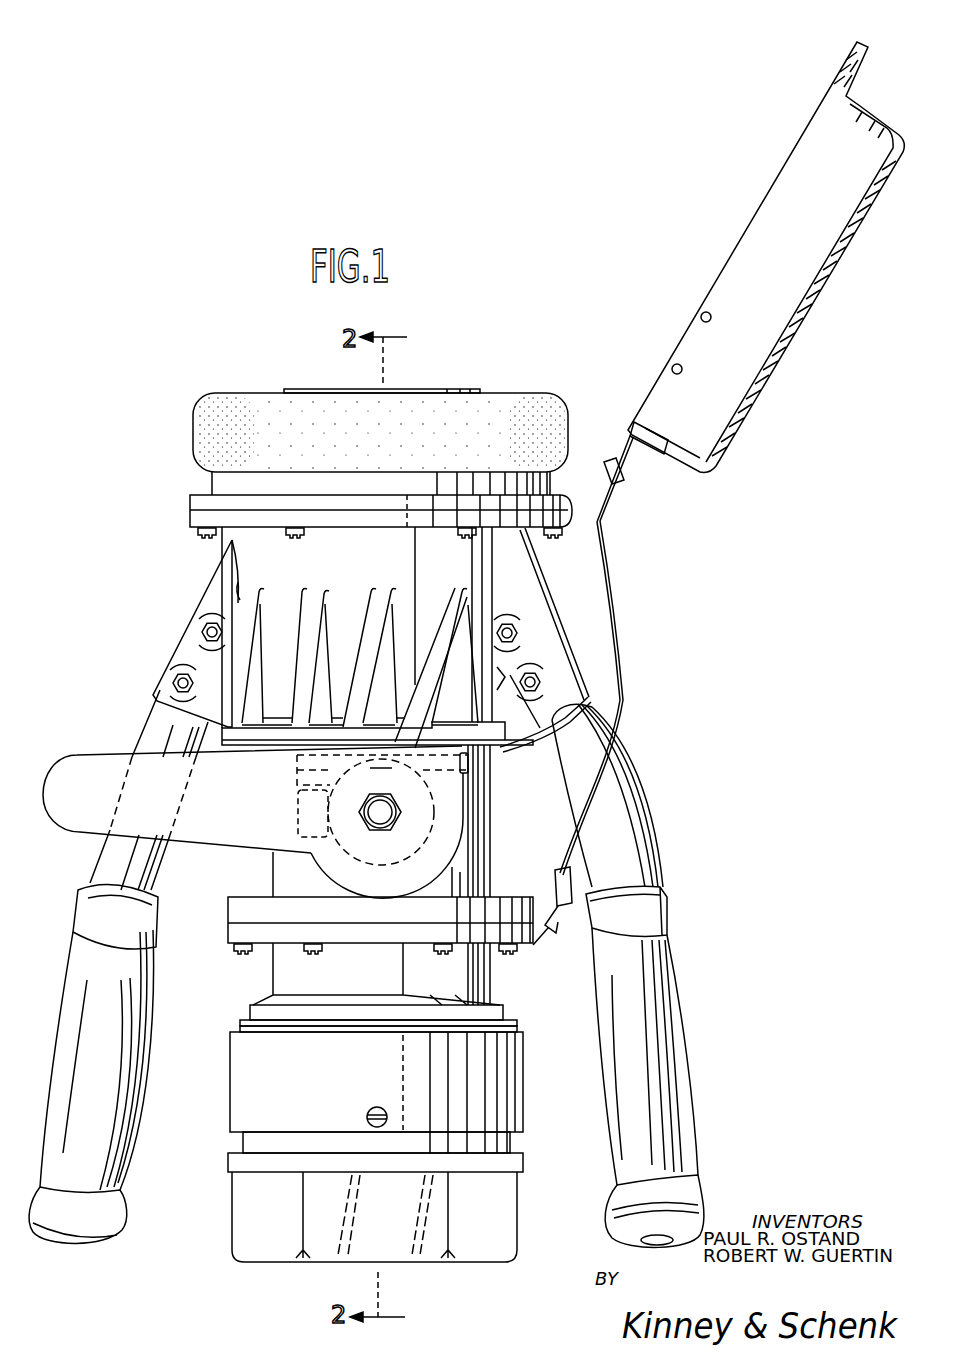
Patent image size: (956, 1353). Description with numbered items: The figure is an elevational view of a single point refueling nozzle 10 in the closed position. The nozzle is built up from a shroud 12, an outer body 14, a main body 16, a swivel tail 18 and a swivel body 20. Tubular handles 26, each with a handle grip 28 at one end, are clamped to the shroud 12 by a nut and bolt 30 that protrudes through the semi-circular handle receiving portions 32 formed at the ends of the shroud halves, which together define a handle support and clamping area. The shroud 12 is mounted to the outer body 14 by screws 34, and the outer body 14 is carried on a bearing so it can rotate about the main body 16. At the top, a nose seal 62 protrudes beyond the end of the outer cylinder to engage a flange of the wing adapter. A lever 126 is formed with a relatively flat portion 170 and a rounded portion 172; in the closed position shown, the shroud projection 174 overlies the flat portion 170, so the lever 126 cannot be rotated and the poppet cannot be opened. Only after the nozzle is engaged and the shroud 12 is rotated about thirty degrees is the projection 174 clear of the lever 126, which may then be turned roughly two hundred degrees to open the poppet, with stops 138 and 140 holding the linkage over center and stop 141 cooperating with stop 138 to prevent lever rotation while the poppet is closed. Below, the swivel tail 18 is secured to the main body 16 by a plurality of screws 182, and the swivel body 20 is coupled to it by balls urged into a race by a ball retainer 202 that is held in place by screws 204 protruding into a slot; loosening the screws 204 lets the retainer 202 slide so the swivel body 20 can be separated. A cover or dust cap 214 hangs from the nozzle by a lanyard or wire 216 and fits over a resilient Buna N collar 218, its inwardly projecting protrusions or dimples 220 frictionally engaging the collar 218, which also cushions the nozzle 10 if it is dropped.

The single point refueling nozzle 10 is at (165, 377).
The shroud 12 is at (256, 566).
The outer body 14 is at (223, 480).
The main body 16 is at (483, 818).
The swivel tail 18 is at (485, 1002).
The swivel body 20 is at (492, 1212).
The tubular handles 26 is at (160, 741).
The handle grip 28 is at (125, 1120).
The nut and bolt 30 is at (198, 632).
The handle receiving portions 32 is at (193, 715).
The screws 34 is at (205, 532).
The nose seal 62 is at (430, 392).
The lever 126 is at (80, 820).
The stop 138 is at (300, 817).
The stop 140 is at (471, 766).
The stop 141 is at (293, 773).
The flat portion 170 is at (380, 767).
The rounded portion 172 is at (395, 890).
The shroud projection 174 is at (392, 752).
The screws 182 is at (238, 962).
The ball retainer 202 is at (497, 1075).
The screws 204 is at (375, 1108).
The cover or dust cap 214 is at (704, 470).
The lanyard or wire 216 is at (622, 690).
The collar 218 is at (530, 398).
The protrusions or dimples 220 is at (701, 316).